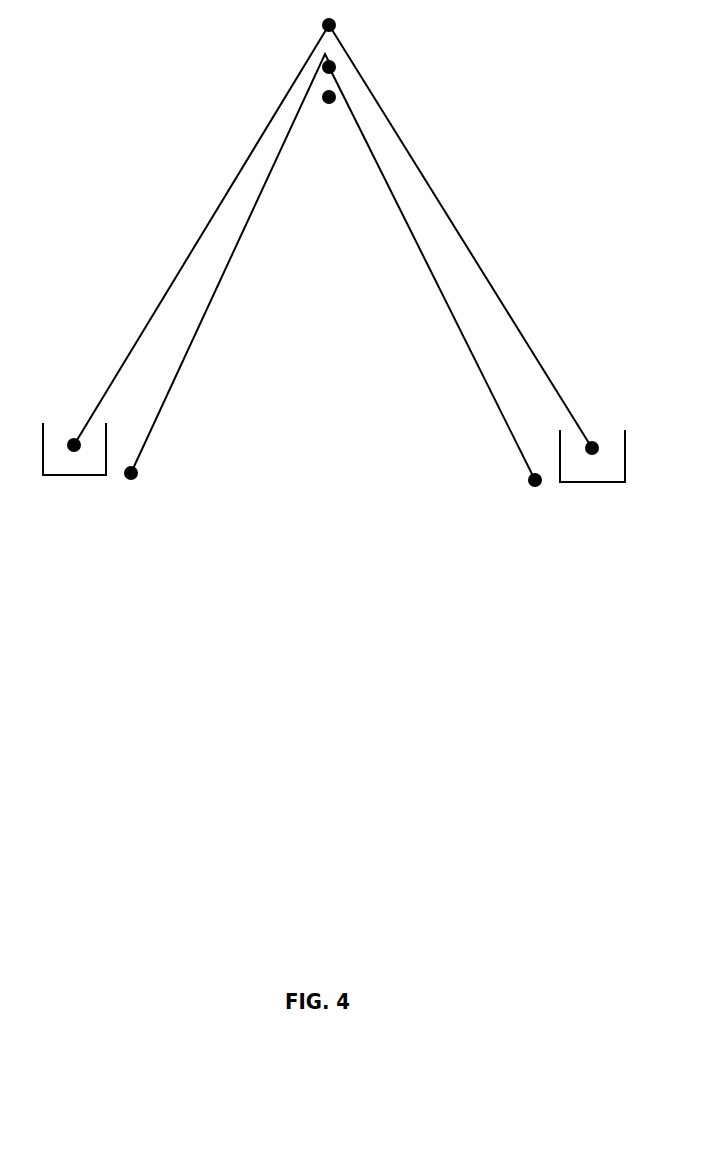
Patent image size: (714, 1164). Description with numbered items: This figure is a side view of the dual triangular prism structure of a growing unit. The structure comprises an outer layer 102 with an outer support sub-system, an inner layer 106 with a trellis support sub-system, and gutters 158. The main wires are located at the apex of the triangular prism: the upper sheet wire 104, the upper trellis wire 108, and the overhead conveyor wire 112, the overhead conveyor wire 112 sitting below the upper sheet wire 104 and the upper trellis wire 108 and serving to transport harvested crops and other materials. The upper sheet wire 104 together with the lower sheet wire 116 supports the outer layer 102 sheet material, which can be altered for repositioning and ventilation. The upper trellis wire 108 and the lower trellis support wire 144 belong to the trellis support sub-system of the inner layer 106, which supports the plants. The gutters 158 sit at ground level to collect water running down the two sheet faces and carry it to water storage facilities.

The outer layer 102 is at (418, 153).
The upper sheet wire 104 is at (340, 25).
The inner layer 106 is at (408, 205).
The upper trellis wire 108 is at (335, 67).
The overhead conveyor wire 112 is at (335, 97).
The lower sheet wire 116 is at (596, 441).
The lower trellis support wire 144 is at (528, 481).
The gutter 158 is at (589, 482).